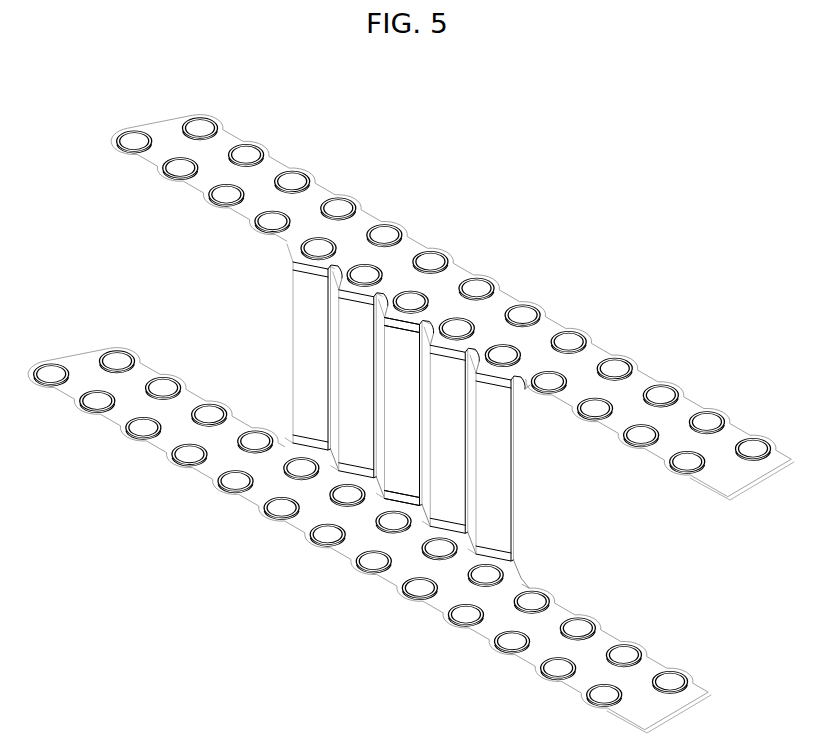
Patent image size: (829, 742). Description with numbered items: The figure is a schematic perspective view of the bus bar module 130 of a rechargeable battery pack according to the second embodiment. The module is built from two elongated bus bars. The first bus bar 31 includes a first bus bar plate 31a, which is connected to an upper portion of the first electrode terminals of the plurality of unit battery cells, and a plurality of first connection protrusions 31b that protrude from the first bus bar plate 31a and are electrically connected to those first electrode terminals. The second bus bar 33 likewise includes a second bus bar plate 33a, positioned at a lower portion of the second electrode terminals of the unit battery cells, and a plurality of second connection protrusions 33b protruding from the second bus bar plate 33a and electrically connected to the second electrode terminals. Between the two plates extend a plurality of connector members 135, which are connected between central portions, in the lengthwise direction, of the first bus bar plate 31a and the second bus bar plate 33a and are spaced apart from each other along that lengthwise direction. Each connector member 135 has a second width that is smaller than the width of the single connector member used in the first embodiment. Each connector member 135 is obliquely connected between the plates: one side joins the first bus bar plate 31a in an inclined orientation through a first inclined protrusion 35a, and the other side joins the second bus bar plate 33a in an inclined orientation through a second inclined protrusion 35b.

The bus bar module 130 is at (408, 414).
The first bus bar 31 is at (450, 298).
The first bus bar plate 31a is at (368, 228).
The first connection protrusions 31b is at (342, 210).
The second bus bar 33 is at (367, 531).
The second bus bar plate 33a is at (254, 498).
The second connection protrusions 33b is at (230, 482).
The connector members 135 is at (393, 420).
The first inclined protrusion 35a is at (400, 320).
The second inclined protrusion 35b is at (413, 507).